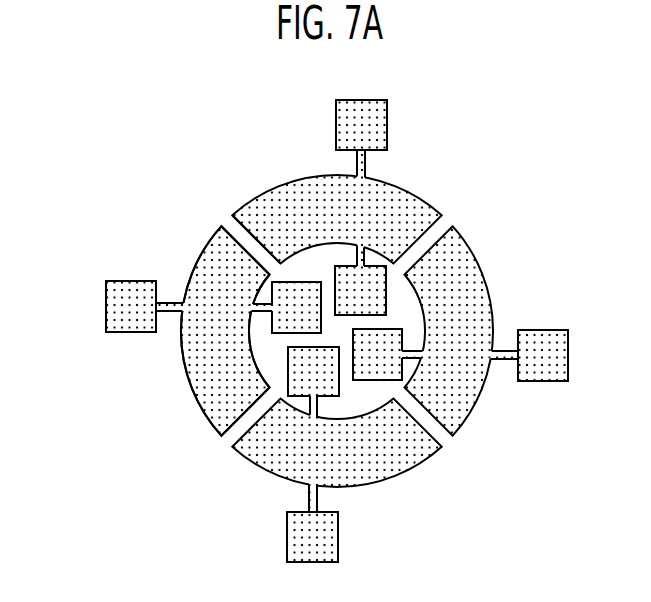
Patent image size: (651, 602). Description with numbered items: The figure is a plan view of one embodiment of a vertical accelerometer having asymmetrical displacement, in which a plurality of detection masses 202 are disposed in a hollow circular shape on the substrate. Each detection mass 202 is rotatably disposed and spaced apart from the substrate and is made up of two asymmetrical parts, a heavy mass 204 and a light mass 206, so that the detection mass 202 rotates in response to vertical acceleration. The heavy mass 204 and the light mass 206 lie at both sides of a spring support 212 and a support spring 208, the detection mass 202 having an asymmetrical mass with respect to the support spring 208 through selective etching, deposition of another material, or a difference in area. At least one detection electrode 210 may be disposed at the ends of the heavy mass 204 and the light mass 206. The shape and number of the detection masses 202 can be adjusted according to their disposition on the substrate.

The detection mass 202 is at (306, 185).
The heavy mass 204 is at (198, 392).
The light mass 206 is at (200, 275).
The support spring 208 is at (165, 305).
The detection electrode 210 is at (232, 227).
The spring support 212 is at (110, 322).